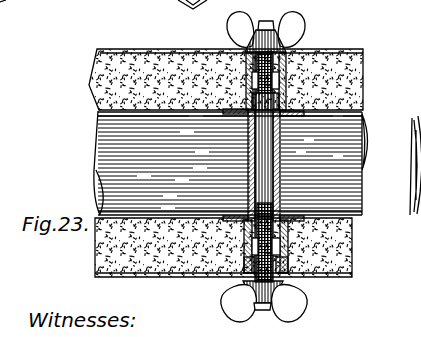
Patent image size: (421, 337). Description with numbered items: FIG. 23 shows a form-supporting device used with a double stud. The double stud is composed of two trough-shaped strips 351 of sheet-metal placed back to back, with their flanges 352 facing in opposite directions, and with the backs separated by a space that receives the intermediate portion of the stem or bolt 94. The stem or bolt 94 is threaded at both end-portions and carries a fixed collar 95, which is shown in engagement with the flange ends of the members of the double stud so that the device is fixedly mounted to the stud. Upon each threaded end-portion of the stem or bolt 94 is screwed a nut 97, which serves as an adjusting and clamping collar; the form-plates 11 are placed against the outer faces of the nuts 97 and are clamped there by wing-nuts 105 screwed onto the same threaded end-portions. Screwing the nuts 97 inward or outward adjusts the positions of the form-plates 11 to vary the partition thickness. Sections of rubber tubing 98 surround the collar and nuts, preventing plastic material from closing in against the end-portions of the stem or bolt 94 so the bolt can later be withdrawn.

The form-plate 11 is at (138, 50).
The wing-nut 105 is at (298, 27).
The rubber tubing section 98 is at (248, 70).
The flange 352 is at (246, 95).
The nut 97 is at (288, 77).
The fixed collar 95 is at (287, 103).
The trough-shaped strip 351 is at (248, 148).
The stem or bolt 94 is at (281, 177).